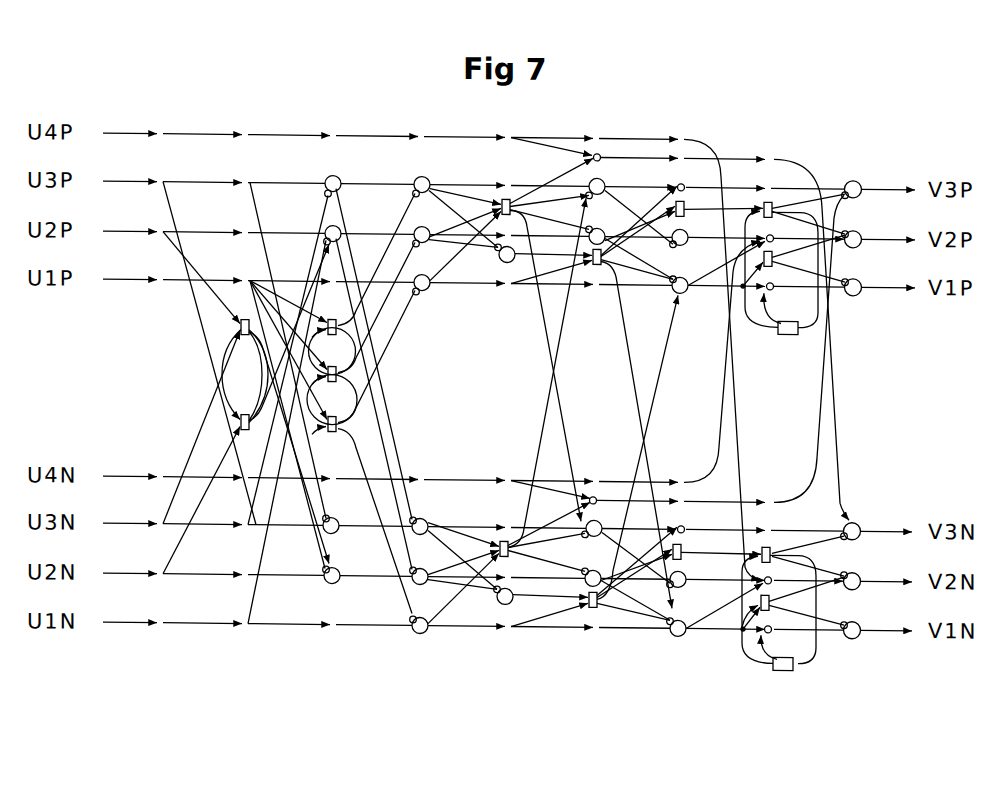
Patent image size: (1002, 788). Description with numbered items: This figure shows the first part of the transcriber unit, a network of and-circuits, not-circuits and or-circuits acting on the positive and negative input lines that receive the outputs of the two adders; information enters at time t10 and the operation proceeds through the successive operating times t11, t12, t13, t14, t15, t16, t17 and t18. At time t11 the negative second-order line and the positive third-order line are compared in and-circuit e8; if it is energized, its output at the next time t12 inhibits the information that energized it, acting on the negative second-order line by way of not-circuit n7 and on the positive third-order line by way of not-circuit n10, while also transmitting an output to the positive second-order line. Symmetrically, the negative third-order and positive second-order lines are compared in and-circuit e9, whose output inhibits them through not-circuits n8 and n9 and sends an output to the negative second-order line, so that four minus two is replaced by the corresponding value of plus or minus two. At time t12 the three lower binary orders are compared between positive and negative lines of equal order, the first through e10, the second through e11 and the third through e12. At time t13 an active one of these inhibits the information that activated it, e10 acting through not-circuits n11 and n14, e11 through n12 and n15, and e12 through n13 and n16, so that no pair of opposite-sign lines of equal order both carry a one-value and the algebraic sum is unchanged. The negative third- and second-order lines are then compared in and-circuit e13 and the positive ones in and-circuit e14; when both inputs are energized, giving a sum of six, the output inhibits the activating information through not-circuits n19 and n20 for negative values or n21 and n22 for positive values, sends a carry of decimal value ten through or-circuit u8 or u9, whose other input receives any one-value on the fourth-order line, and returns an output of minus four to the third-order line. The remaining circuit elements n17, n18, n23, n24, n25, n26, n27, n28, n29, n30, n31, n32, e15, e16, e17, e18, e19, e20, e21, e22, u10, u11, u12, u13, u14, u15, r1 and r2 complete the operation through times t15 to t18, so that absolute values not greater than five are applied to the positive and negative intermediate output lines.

The input time t10 is at (166, 107).
The operating time t11 is at (250, 108).
The operating time t12 is at (338, 109).
The operating time t13 is at (425, 109).
The time step t14 is at (512, 110).
The operating time t15 is at (600, 111).
The time step t16 is at (686, 112).
The time step t17 is at (773, 113).
The operating time t18 is at (860, 114).
The not-circuit n7 is at (329, 584).
The not-circuit n8 is at (336, 533).
The not-circuit n9 is at (331, 228).
The not-circuit n10 is at (332, 179).
The not-circuit n11 is at (423, 633).
The not-circuit n12 is at (424, 584).
The not-circuit n13 is at (424, 534).
The not-circuit n14 is at (421, 277).
The not-circuit n15 is at (421, 229).
The not-circuit n16 is at (421, 179).
The node n17 is at (496, 604).
The node n18 is at (498, 264).
The not-circuit n19 is at (599, 572).
The not-circuit n20 is at (598, 537).
The not-circuit n21 is at (602, 231).
The not-circuit n22 is at (604, 196).
The node n23 is at (682, 637).
The node n24 is at (685, 588).
The node n25 is at (687, 280).
The node n26 is at (687, 247).
The node n27 is at (859, 640).
The node n28 is at (859, 591).
The node n29 is at (859, 541).
The node n30 is at (860, 297).
The node n31 is at (860, 249).
The node n32 is at (860, 199).
The and-circuit e8 is at (239, 431).
The and-circuit e9 is at (239, 336).
The and-circuit e10 is at (331, 434).
The and-circuit e11 is at (331, 384).
The and-circuit e12 is at (331, 336).
The and-circuit e13 is at (499, 558).
The and-circuit e14 is at (499, 217).
The element e15 is at (587, 610).
The element e16 is at (589, 267).
The element e17 is at (692, 556).
The element e18 is at (694, 212).
The element e19 is at (778, 608).
The element e20 is at (765, 549).
The element e21 is at (769, 267).
The element e22 is at (767, 204).
The or-circuit u8 is at (598, 494).
The or-circuit u9 is at (602, 151).
The unit u10 is at (690, 523).
The unit u11 is at (690, 181).
The unit u12 is at (779, 638).
The unit u13 is at (776, 574).
The unit u14 is at (779, 295).
The unit u15 is at (776, 232).
The register r1 is at (783, 674).
The register r2 is at (788, 338).